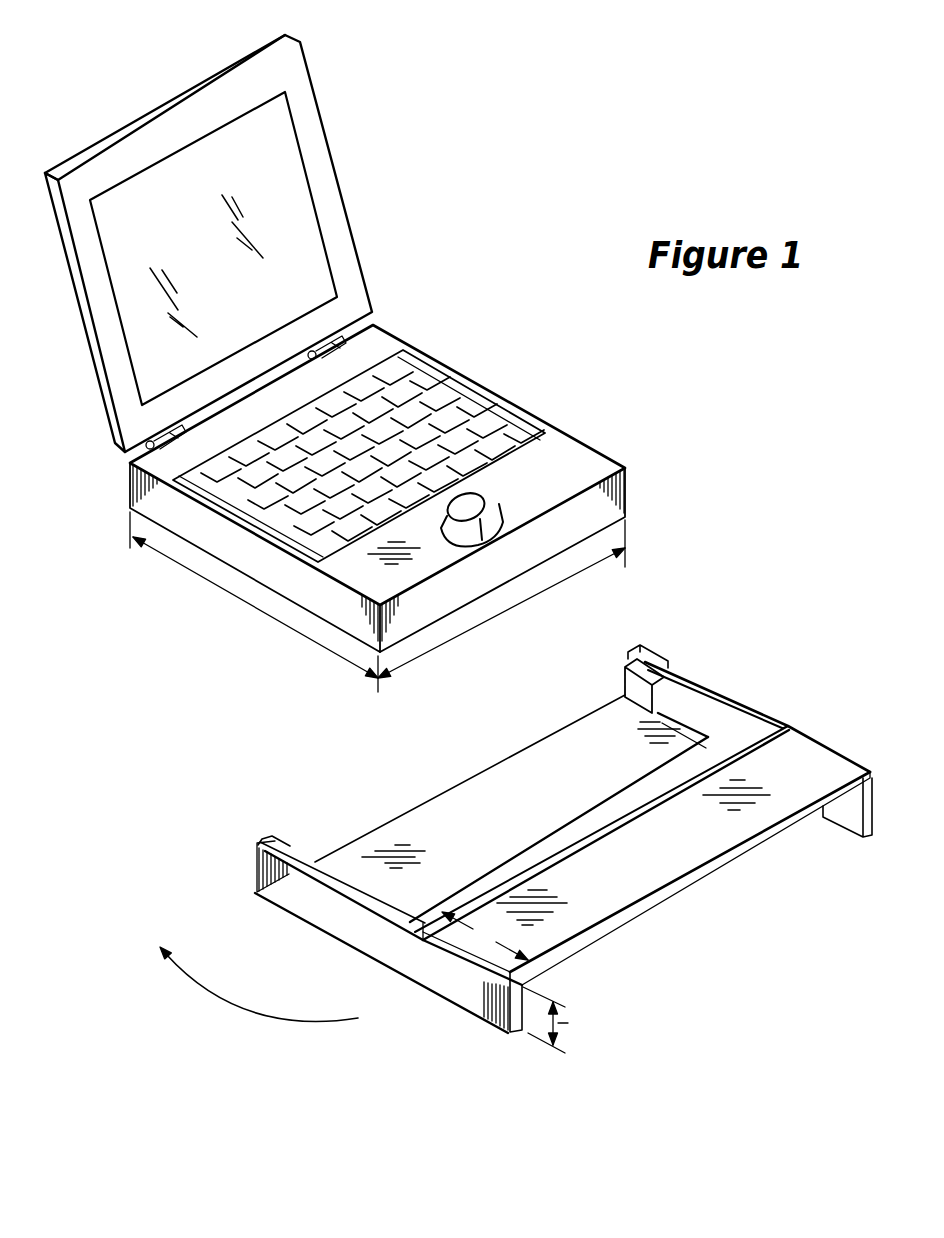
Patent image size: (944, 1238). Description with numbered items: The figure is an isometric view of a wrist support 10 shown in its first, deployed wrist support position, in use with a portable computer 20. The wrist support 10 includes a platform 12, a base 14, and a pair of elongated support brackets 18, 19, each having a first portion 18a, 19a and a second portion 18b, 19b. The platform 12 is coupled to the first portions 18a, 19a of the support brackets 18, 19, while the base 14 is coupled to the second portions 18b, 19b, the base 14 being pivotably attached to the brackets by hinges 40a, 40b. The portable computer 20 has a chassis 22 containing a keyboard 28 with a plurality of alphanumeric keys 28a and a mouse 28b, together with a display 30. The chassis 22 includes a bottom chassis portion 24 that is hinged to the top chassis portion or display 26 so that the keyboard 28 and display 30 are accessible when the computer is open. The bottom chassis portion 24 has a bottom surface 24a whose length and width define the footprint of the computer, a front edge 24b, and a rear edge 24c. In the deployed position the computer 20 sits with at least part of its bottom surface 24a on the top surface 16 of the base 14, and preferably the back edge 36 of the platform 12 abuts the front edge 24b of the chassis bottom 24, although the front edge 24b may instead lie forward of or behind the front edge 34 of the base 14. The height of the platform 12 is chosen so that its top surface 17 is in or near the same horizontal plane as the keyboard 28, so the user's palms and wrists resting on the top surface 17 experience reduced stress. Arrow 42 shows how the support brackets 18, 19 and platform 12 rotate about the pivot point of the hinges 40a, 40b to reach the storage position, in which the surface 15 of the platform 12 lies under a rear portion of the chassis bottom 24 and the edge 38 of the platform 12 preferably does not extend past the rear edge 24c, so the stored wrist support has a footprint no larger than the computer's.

The wrist support 10 is at (802, 712).
The platform 12 is at (820, 763).
The base 14 is at (485, 782).
The surface of the platform 15 is at (613, 955).
The top surface of the base 16 is at (553, 801).
The top surface of the platform 17 is at (637, 870).
The support bracket 18 is at (370, 943).
The first portion of support bracket 18a is at (485, 1005).
The second portion of support bracket 18b is at (267, 902).
The support bracket 19 is at (712, 713).
The first portion of support bracket 19a is at (848, 817).
The second portion of support bracket 19b is at (652, 663).
The portable computer 20 is at (535, 388).
The chassis 22 is at (585, 460).
The bottom chassis portion 24 is at (198, 535).
The bottom surface 24a is at (272, 588).
The front edge of the chassis bottom 24b is at (627, 484).
The rear edge of the chassis bottom 24c is at (128, 493).
The display 26 is at (305, 245).
The keyboard 28 is at (357, 577).
The alphanumeric keys 28a is at (445, 375).
The mouse 28b is at (493, 495).
The display 30 is at (330, 155).
The front edge of the base 34 is at (467, 873).
The back edge of the platform 36 is at (647, 798).
The edge of the platform 38 is at (742, 850).
The hinge 40a is at (268, 837).
The hinge 40b is at (625, 652).
The arrow 42 is at (242, 1008).